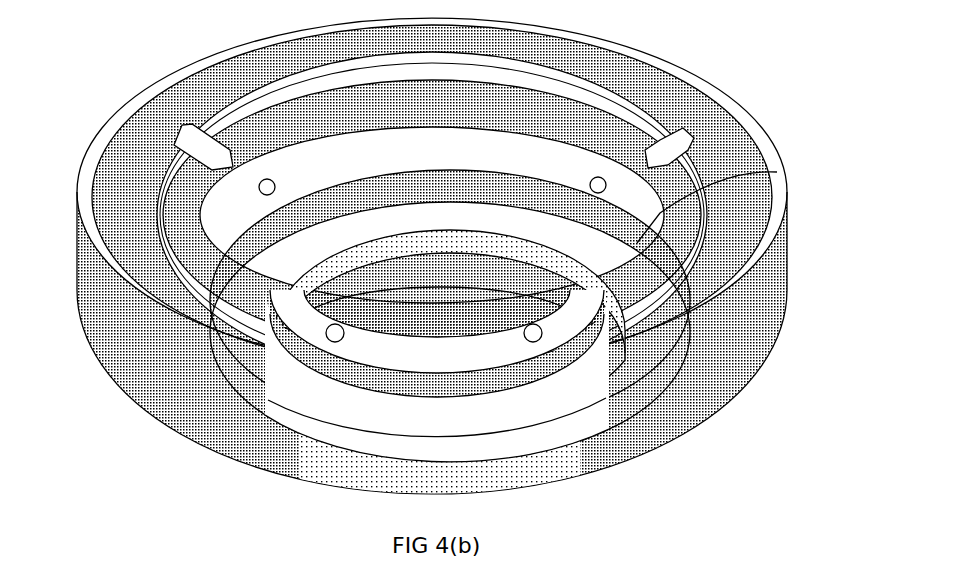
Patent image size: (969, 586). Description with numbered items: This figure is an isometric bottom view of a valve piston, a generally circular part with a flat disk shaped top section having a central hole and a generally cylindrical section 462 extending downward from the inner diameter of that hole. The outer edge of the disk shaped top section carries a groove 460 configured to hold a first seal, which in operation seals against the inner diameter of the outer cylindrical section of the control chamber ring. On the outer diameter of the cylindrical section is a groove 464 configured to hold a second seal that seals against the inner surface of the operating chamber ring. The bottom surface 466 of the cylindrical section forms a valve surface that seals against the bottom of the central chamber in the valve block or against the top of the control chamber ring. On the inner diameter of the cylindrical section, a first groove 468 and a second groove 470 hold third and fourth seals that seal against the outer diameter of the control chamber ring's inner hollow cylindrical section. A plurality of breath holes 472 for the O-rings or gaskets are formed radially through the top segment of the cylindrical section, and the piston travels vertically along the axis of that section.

The groove 460 is at (205, 77).
The generally cylindrical section 462 is at (620, 320).
The groove 464 is at (777, 172).
The bottom surface 466 is at (700, 417).
The first groove 468 is at (207, 443).
The second groove 470 is at (430, 333).
The breath holes 472 is at (262, 180).